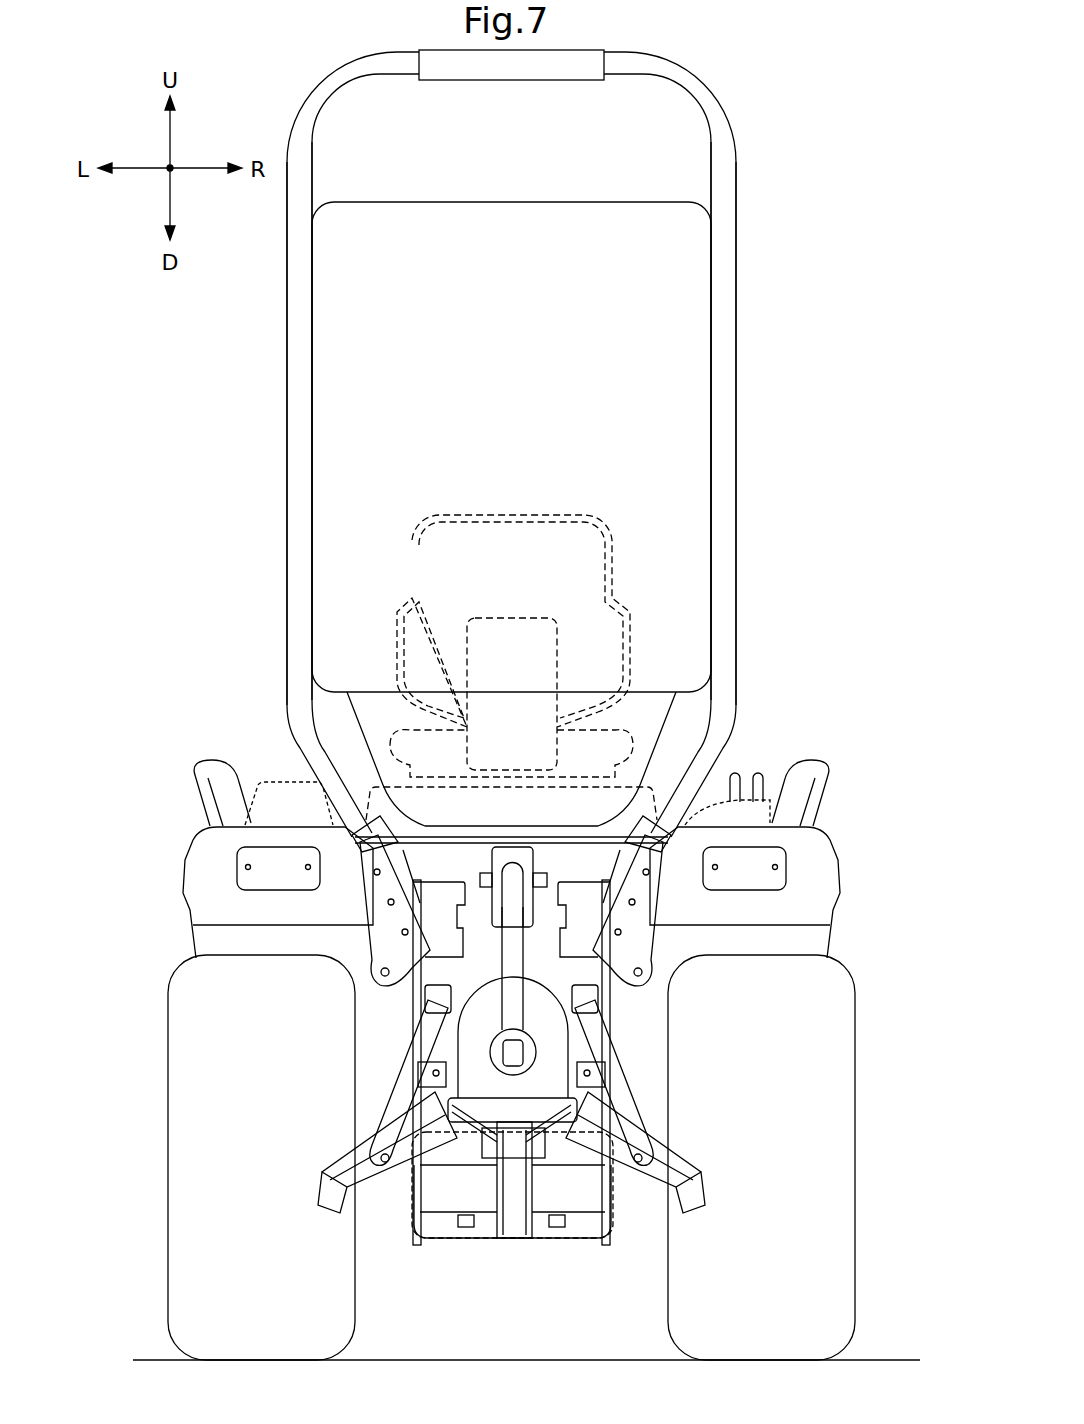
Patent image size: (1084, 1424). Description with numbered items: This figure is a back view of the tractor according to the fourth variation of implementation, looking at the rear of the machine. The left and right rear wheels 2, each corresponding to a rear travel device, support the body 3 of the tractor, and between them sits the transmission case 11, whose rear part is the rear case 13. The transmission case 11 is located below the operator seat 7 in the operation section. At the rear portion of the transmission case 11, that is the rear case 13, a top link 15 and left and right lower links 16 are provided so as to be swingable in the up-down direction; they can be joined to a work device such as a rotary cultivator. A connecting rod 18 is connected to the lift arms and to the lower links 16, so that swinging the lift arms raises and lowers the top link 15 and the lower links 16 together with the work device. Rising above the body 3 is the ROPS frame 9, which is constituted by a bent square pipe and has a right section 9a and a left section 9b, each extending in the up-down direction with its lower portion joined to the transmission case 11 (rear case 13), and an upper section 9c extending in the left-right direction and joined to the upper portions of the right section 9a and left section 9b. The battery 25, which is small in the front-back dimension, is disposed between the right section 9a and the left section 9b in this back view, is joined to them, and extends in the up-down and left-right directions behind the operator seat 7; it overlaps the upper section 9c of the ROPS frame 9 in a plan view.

The rear wheels 2 is at (168, 1152).
The body 3 is at (433, 1249).
The operator seat 7 is at (615, 572).
The ROPS frame 9 is at (758, 110).
The right section 9a is at (720, 404).
The left section 9b is at (300, 403).
The upper section 9c is at (563, 72).
The transmission case 11 is at (513, 887).
The rear case 13 is at (617, 1042).
The top link 15 is at (512, 958).
The lower links 16 is at (347, 1163).
The connecting rod 18 is at (403, 1082).
The battery 25 is at (333, 580).